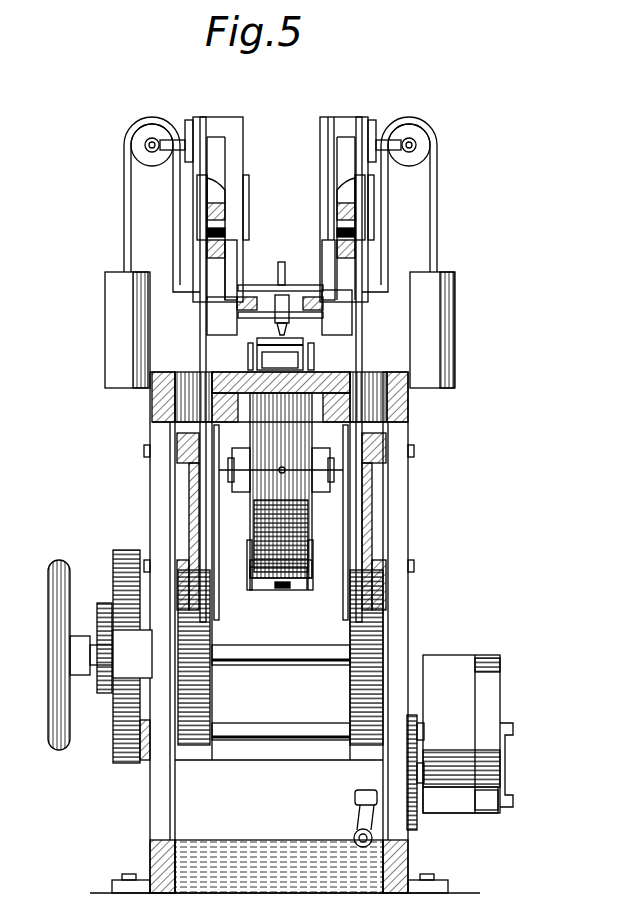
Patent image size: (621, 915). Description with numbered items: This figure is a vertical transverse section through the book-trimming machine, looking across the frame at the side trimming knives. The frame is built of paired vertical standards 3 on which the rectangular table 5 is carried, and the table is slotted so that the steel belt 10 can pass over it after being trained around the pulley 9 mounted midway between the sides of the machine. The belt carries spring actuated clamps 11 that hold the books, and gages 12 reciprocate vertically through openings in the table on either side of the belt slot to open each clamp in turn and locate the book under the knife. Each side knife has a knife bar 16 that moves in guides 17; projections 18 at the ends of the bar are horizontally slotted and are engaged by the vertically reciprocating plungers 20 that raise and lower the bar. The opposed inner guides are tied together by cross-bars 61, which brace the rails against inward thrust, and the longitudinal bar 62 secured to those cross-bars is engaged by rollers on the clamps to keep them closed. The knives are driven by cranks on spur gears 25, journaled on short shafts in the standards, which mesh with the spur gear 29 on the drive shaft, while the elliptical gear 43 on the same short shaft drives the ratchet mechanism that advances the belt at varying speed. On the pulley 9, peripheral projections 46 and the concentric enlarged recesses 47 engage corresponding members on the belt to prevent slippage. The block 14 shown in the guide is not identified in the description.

The vertical standard 3 is at (158, 508).
The rectangular table 5 is at (323, 374).
The pulley 9 is at (265, 510).
The steel belt 10 is at (268, 585).
The spring actuated clamp 11 is at (300, 588).
The gage 12 is at (256, 352).
The guide block 14 is at (220, 190).
The knife bar 16 is at (220, 297).
The guide 17 is at (330, 263).
The projection 18 is at (322, 216).
The plunger 20 is at (200, 428).
The spur gear 25 is at (195, 702).
The spur gear 29 is at (272, 650).
The elliptical gear 43 is at (104, 603).
The projection 46 is at (280, 468).
The enlarged recess 47 is at (285, 468).
The cross-bar 61 is at (295, 292).
The longitudinal bar 62 is at (276, 326).